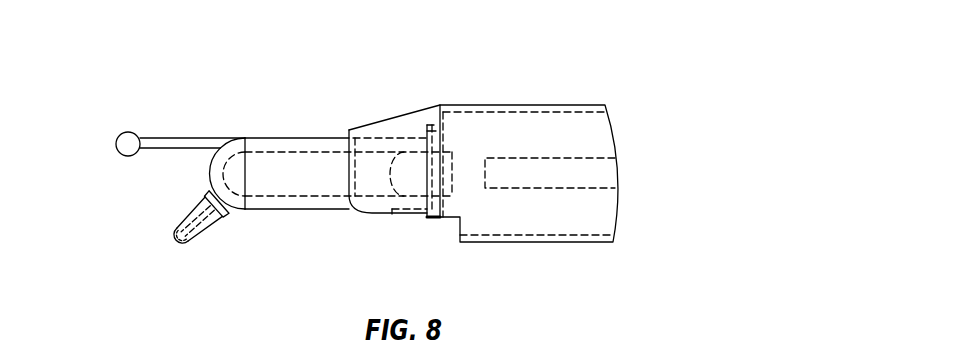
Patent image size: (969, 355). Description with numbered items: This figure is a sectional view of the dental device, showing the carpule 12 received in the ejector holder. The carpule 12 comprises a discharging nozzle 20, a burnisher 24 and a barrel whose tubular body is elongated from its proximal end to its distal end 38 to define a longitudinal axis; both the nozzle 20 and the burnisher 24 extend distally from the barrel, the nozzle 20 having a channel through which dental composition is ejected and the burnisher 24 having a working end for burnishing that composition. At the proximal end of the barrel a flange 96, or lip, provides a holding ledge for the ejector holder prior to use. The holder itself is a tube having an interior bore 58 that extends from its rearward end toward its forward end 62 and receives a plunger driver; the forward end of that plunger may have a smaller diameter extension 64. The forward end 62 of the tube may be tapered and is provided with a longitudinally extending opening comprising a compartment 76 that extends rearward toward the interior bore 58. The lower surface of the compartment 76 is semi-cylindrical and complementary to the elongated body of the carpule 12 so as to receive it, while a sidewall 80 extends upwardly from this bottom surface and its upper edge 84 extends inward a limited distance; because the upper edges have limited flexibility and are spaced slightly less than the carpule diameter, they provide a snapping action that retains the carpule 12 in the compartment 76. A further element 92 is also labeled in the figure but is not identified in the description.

The carpule 12 is at (263, 96).
The discharging nozzle 20 is at (137, 236).
The burnisher 24 is at (141, 112).
The distal end 38 is at (210, 173).
The interior bore 58 is at (530, 128).
The forward end 62 is at (345, 257).
The smaller diameter extension 64 is at (572, 158).
The compartment 76 is at (378, 138).
The sidewall 80 is at (392, 212).
The upper edge 84 is at (427, 204).
The seal 92 is at (425, 130).
The flange 96 is at (438, 127).